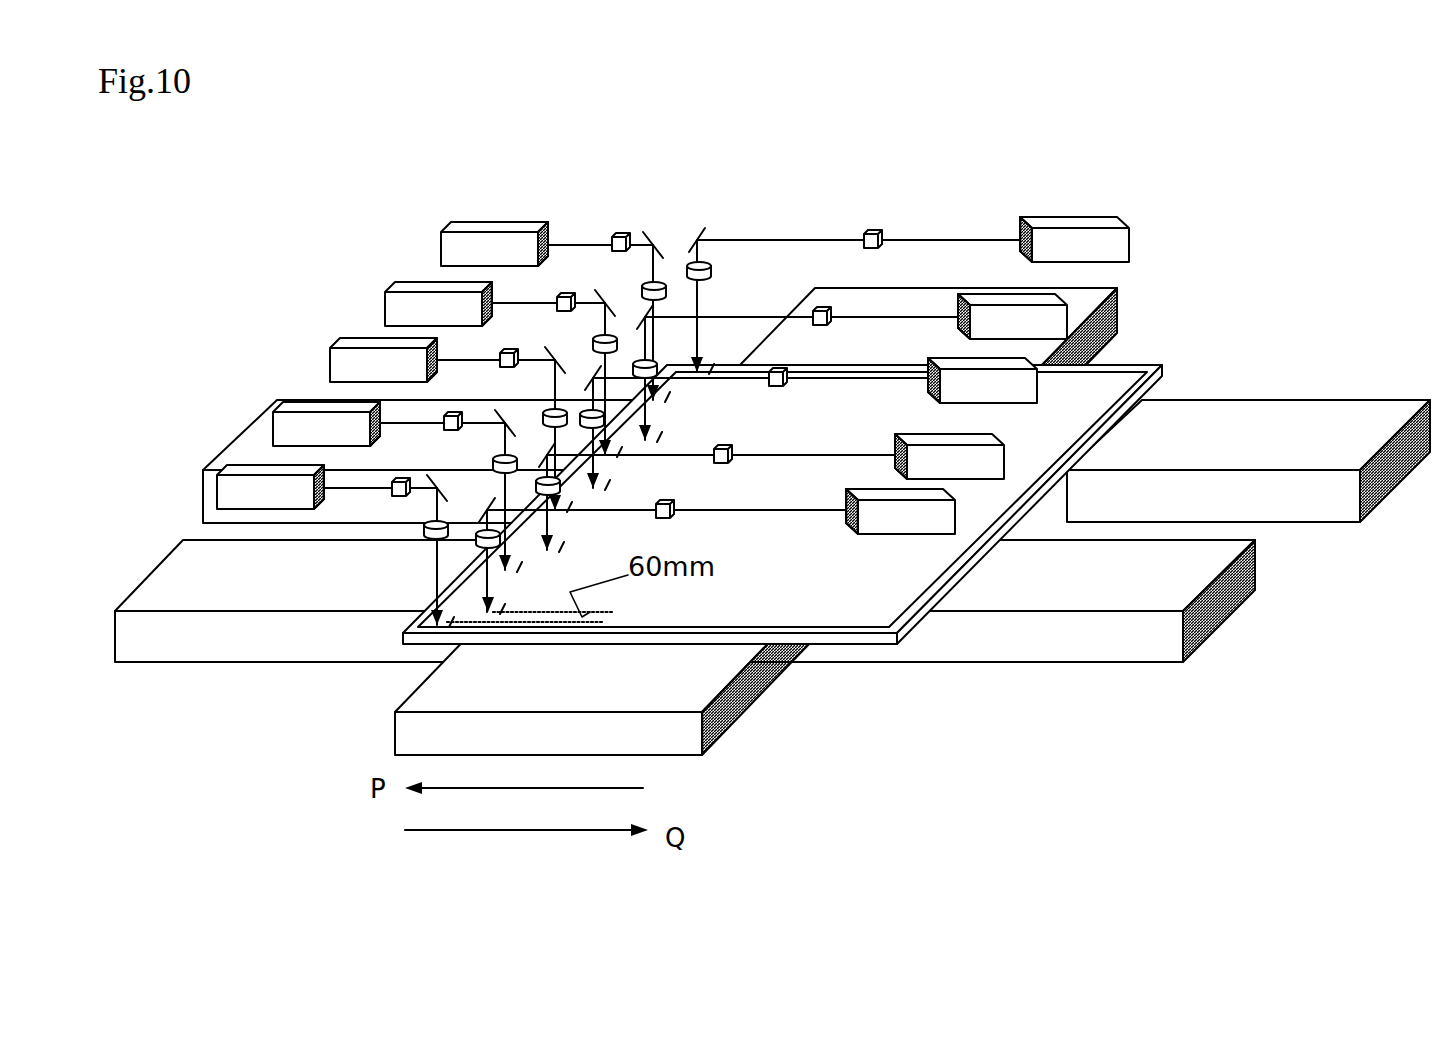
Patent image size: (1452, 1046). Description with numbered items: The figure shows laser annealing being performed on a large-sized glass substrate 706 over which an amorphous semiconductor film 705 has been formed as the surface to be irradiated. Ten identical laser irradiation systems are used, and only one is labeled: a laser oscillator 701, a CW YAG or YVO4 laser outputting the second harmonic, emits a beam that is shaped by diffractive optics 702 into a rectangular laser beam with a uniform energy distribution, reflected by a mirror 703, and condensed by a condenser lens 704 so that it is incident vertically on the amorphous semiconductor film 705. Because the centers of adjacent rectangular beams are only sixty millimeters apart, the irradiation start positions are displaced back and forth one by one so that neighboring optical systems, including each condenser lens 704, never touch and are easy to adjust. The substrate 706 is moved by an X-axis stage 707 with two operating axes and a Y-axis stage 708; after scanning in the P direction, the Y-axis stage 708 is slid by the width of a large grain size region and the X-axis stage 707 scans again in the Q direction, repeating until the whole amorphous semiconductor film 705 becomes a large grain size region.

The laser oscillator 701 is at (517, 231).
The diffractive optics 702 is at (617, 231).
The mirror 703 is at (650, 243).
The condenser lens 704 is at (667, 285).
The amorphous semiconductor film 705 is at (877, 612).
The glass substrate 706 is at (780, 637).
The X-axis stage 707 is at (1058, 577).
The Y-axis stage 708 is at (717, 702).